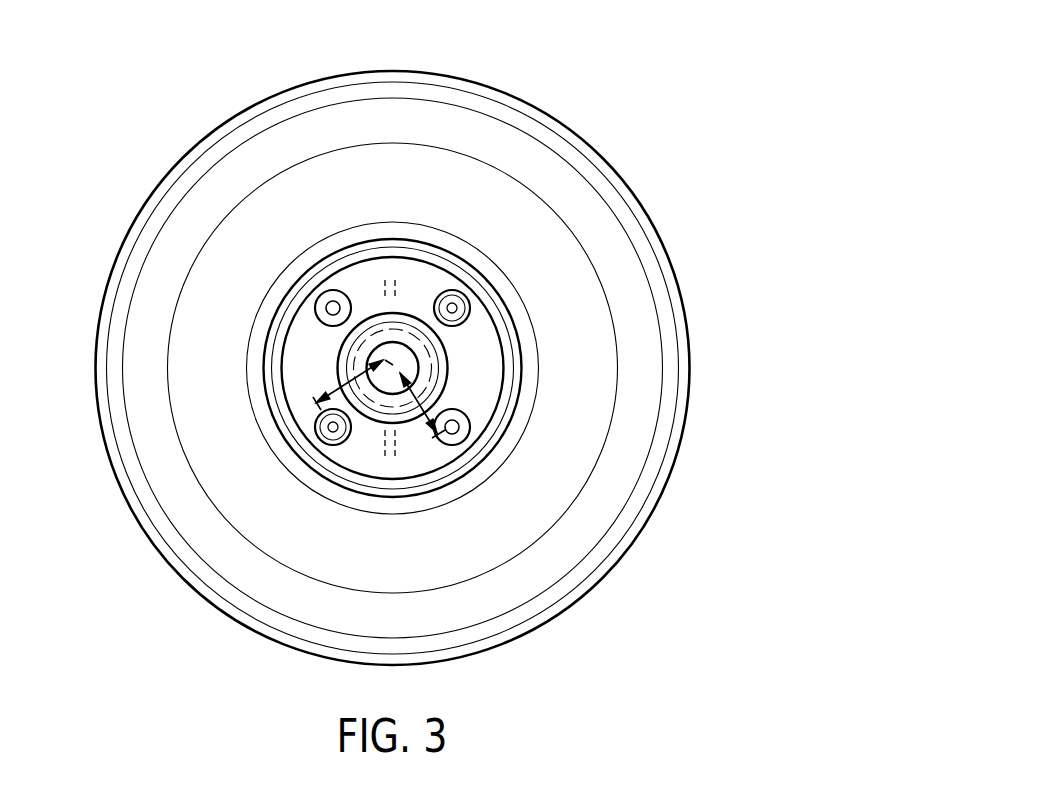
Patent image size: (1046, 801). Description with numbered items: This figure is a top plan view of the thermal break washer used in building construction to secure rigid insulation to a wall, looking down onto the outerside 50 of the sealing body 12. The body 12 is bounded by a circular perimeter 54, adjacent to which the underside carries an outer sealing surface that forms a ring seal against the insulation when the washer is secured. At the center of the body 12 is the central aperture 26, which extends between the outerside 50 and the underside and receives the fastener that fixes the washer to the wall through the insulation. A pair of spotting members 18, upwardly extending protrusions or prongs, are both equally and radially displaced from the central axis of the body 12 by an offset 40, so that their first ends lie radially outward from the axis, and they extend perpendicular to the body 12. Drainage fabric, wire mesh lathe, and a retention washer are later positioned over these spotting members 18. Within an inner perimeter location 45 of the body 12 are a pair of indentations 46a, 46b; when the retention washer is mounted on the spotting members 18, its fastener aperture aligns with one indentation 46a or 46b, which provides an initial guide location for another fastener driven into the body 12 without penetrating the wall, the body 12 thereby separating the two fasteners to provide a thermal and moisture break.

The sealing body 12 is at (393, 368).
The spotting members 18 is at (410, 429).
The central aperture 26 is at (537, 268).
The offset 40 is at (381, 394).
The inner perimeter location 45 is at (389, 264).
The indentation 46a is at (557, 486).
The indentation 46b is at (200, 363).
The outerside 50 is at (445, 368).
The circular perimeter 54 is at (408, 368).